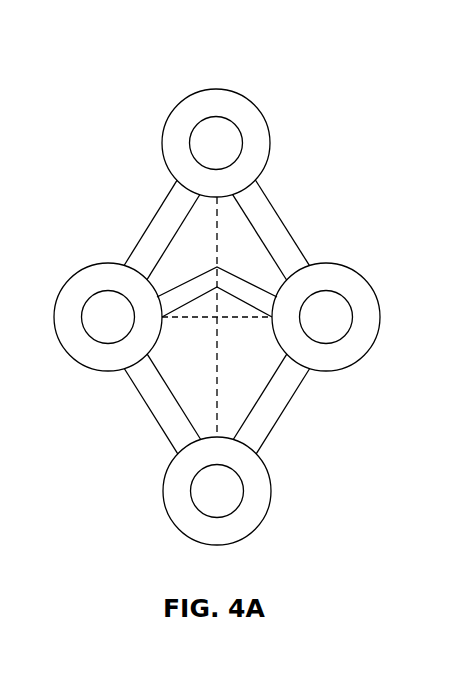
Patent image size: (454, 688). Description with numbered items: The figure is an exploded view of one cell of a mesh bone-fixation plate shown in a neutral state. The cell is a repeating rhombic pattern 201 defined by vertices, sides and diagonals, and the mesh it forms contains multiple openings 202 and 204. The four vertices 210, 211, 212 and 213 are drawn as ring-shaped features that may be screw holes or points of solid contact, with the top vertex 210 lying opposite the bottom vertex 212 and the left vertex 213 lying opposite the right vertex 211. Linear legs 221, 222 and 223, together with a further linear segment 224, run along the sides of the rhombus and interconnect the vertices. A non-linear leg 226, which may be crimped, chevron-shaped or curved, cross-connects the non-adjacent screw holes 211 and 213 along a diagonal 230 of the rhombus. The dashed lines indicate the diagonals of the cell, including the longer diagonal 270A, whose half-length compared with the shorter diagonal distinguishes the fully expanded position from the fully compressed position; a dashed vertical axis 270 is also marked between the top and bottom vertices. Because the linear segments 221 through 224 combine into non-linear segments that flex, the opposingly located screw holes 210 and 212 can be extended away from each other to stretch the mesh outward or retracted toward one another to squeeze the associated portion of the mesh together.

The rhombic pattern 201 is at (132, 107).
The opening 202 is at (200, 217).
The opening 204 is at (276, 378).
The vertex 210 is at (272, 140).
The vertex 211 is at (365, 278).
The vertex 212 is at (273, 487).
The vertex 213 is at (100, 372).
The linear leg 221 is at (295, 240).
The linear leg 222 is at (284, 404).
The linear leg 223 is at (160, 427).
The linear segment 224 is at (152, 222).
The non-linear leg 226 is at (182, 283).
The diagonal 230 is at (258, 373).
The vertical axis 270 is at (218, 233).
The longer diagonal 270A is at (165, 458).